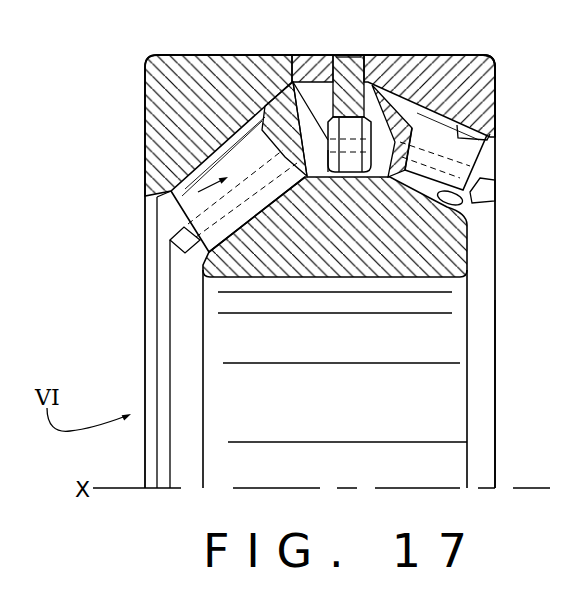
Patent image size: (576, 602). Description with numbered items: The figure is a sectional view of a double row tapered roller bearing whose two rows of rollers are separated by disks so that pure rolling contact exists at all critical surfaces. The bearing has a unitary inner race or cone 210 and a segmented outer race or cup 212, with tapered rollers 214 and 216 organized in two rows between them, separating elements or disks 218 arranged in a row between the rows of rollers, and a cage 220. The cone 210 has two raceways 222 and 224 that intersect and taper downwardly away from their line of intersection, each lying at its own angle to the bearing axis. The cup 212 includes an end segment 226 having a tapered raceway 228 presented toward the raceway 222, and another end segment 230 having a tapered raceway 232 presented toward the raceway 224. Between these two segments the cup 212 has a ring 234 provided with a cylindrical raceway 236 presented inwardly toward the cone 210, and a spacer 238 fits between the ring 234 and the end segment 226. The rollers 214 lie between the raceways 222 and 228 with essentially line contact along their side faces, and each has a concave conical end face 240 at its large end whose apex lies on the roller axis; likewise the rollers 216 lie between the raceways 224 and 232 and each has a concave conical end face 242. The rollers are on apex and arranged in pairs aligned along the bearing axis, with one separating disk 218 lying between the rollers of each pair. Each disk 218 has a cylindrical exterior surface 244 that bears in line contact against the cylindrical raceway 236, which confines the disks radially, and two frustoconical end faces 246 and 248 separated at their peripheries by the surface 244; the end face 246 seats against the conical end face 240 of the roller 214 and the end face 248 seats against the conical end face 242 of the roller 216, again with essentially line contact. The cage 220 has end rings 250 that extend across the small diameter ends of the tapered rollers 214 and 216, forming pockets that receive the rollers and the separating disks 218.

The inner race or cone 210 is at (240, 286).
The outer race or cup 212 is at (143, 90).
The tapered rollers 214 is at (172, 193).
The tapered rollers 216 is at (448, 153).
The separating elements or disks 218 is at (372, 174).
The cage 220 is at (166, 230).
The raceway 222 is at (207, 242).
The raceway 224 is at (490, 194).
The end segment 226 is at (189, 72).
The tapered raceway 228 is at (190, 173).
The end segment 230 is at (484, 67).
The tapered raceway 232 is at (488, 135).
The ring 234 is at (353, 56).
The cylindrical raceway 236 is at (330, 58).
The spacer 238 is at (311, 58).
The concave conical end face 240 is at (291, 108).
The concave conical end face 242 is at (421, 80).
The cylindrical exterior surface 244 is at (355, 158).
The frustoconical end face 246 is at (298, 197).
The frustoconical end face 248 is at (400, 172).
The end rings 250 is at (575, 242).